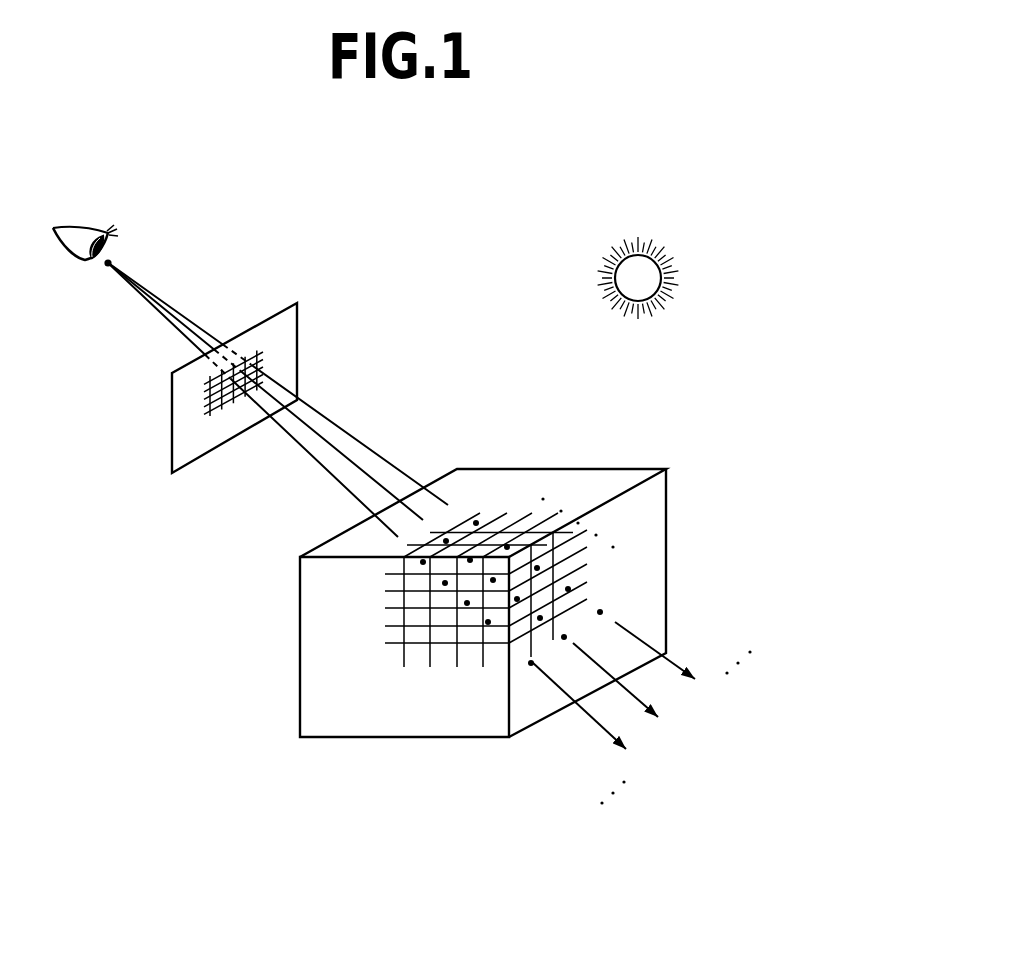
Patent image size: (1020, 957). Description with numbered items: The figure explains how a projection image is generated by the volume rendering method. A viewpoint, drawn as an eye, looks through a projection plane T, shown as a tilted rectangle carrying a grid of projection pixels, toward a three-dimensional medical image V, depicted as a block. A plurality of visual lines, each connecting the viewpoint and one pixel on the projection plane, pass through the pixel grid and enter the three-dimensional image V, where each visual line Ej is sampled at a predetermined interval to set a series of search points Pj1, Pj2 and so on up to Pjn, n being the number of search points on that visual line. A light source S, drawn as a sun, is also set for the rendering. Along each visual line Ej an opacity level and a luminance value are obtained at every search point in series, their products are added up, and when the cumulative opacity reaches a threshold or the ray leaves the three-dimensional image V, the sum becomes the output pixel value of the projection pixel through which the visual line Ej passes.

The image plane (screen) with pixel grid T is at (257, 322).
The light source S is at (638, 278).
The three-dimensional image V is at (568, 469).
The search point Pj1 is at (476, 522).
The search point Pj2 is at (507, 547).
The search point Pjn is at (600, 612).
The visual line Ej is at (683, 664).